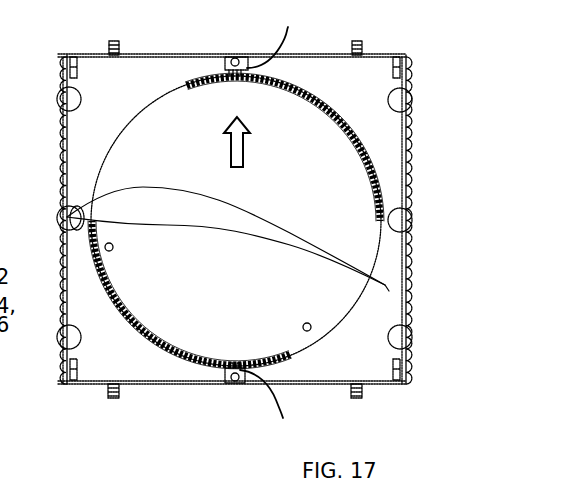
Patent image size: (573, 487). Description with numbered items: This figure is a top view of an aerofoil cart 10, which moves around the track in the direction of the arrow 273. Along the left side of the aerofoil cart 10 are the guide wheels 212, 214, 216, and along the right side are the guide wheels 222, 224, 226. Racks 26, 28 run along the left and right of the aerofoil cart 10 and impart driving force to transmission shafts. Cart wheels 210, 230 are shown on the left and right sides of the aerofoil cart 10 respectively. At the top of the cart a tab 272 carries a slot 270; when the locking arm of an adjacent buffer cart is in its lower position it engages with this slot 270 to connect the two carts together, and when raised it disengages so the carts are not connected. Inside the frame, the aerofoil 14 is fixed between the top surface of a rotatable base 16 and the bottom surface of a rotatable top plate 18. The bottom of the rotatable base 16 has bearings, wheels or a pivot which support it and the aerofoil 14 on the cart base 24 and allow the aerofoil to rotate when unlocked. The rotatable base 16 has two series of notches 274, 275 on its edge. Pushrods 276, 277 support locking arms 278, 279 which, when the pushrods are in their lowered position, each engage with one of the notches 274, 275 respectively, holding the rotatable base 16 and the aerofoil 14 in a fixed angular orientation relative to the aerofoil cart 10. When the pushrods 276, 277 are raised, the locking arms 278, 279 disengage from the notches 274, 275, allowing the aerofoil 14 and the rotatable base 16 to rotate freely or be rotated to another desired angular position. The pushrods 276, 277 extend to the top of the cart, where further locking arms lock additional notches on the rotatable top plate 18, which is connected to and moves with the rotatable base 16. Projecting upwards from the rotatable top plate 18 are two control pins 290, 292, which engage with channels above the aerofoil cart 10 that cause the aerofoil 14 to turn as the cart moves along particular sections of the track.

The aerofoil cart 10 is at (170, 55).
The aerofoil 14 is at (290, 234).
The rotatable base 16 is at (320, 338).
The rotatable top plate 18 is at (340, 323).
The cart base 24 is at (368, 98).
The rack 26 is at (62, 165).
The rack 28 is at (412, 170).
The cart wheels 210 is at (77, 68).
The guide wheel 212 is at (60, 215).
The guide wheel 214 is at (82, 338).
The guide wheel 216 is at (60, 102).
The guide wheel 222 is at (410, 218).
The guide wheel 224 is at (410, 337).
The guide wheel 226 is at (410, 98).
The cart wheels 230 is at (397, 55).
The slot 270 is at (114, 27).
The tab 272 is at (117, 41).
The arrow 273 is at (238, 154).
The notches 274 is at (355, 144).
The notches 275 is at (152, 332).
The pushrod 276 is at (235, 55).
The pushrod 277 is at (235, 384).
The locking arm 278 is at (288, 38).
The locking arm 279 is at (277, 406).
The control pin 290 is at (113, 250).
The control pin 292 is at (303, 324).